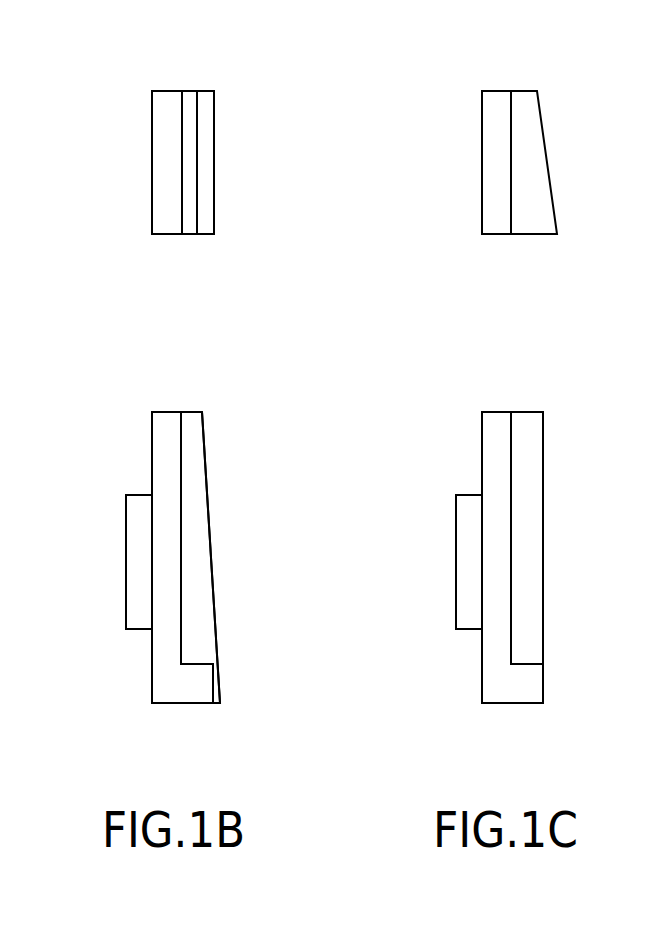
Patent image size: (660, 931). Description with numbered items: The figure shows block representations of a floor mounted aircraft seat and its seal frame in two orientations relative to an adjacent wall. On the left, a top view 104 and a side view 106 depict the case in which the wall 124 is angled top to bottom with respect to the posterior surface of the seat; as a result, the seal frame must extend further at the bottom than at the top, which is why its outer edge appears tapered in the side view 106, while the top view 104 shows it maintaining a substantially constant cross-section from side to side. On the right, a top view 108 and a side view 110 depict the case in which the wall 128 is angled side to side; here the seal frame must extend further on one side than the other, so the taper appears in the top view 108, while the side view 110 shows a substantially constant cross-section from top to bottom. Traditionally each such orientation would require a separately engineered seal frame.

In FIG. 1B, the top view 104 is at (137, 58).
In FIG. 1B, the side view 106 is at (137, 381).
In FIG. 1C, the top view 108 is at (465, 58).
In FIG. 1C, the side view 110 is at (465, 381).
In FIG. 1B, the wall 124 is at (214, 540).
In FIG. 1C, the wall 128 is at (547, 540).